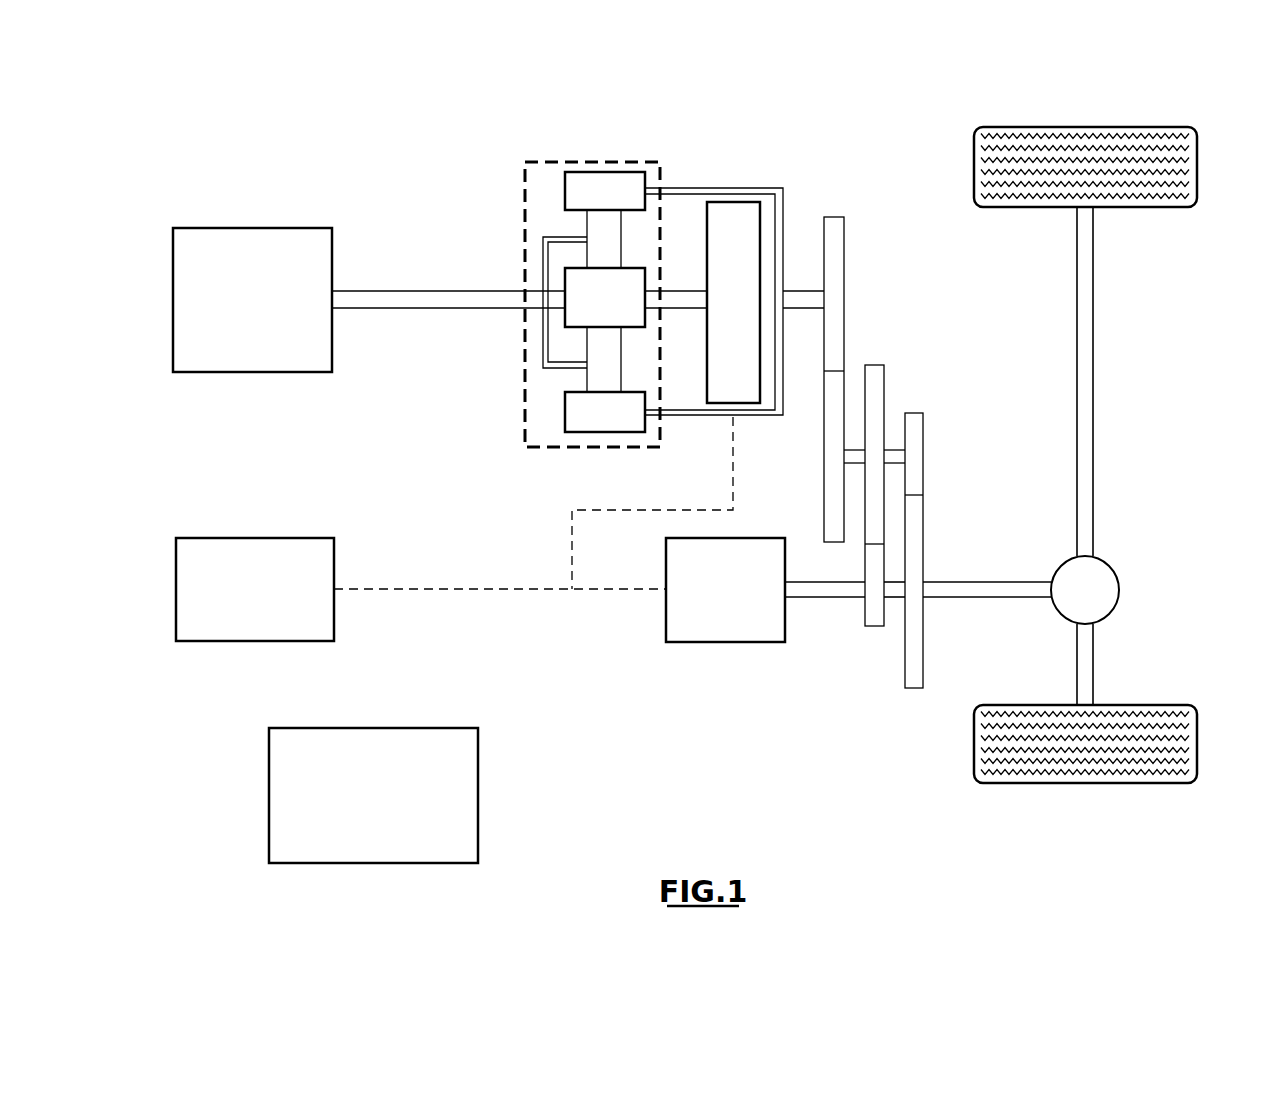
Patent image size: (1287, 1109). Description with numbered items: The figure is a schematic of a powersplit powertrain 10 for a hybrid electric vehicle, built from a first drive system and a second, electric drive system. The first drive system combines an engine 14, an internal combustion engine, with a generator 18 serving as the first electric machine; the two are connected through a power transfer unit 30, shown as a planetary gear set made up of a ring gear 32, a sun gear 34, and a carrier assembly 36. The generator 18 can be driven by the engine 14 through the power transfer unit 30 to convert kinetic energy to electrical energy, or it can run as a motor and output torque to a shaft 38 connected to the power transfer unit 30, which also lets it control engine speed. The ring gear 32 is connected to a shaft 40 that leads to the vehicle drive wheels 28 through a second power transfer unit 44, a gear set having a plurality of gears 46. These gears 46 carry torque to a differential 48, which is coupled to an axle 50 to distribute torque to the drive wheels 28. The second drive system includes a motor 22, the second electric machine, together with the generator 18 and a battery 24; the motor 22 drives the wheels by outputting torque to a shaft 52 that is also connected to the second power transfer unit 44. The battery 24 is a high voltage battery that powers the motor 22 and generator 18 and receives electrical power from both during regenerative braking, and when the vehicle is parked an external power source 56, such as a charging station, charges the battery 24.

The powertrain 10 is at (386, 188).
The engine 14 is at (266, 322).
The generator 18 is at (716, 202).
The motor 22 is at (786, 625).
The battery 24 is at (190, 538).
The vehicle drive wheels 28 is at (1197, 740).
The power transfer unit 30 is at (524, 410).
The ring gear 32 is at (565, 189).
The sun gear 34 is at (565, 278).
The carrier assembly 36 is at (545, 353).
The shaft 38 is at (676, 290).
The shaft 40 is at (802, 290).
The second power transfer unit 44 is at (906, 336).
The gears 46 is at (884, 383).
The differential 48 is at (1112, 610).
The axle 50 is at (1094, 376).
The shaft 52 is at (835, 599).
The external power source 56 is at (386, 849).